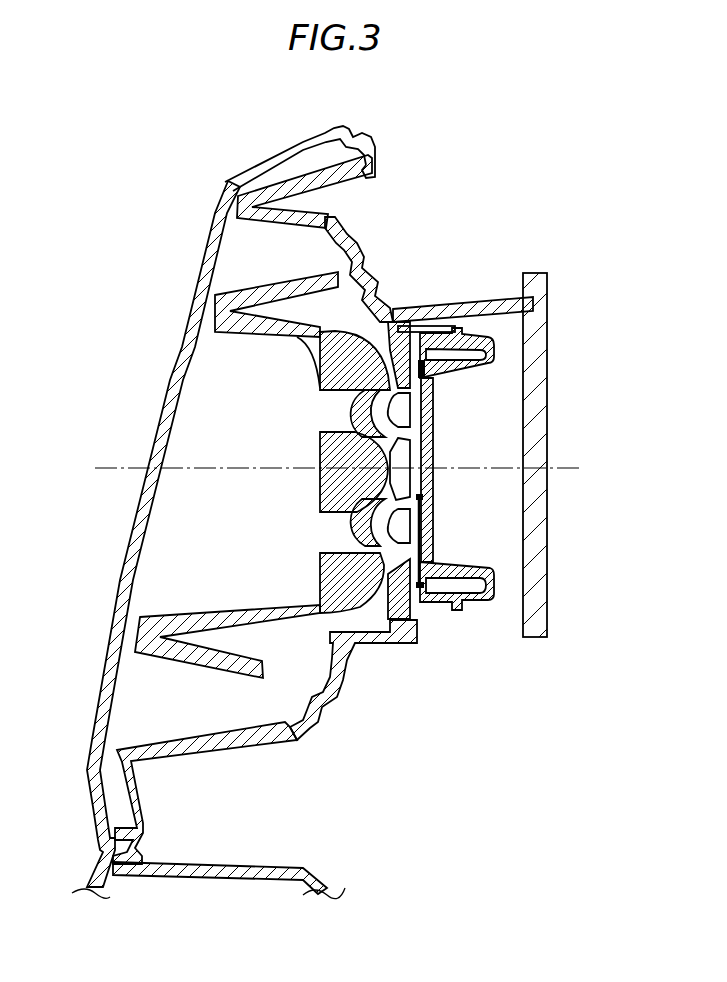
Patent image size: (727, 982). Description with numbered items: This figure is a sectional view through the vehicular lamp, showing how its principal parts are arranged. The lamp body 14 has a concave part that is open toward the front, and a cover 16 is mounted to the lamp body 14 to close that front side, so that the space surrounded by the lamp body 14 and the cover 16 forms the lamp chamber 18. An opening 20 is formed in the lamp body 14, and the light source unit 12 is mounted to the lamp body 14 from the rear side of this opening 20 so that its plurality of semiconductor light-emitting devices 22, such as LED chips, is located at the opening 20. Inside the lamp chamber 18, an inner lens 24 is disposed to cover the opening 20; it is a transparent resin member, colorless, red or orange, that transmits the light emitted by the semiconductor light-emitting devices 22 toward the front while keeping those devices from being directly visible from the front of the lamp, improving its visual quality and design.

The light source unit 12 is at (437, 537).
The lamp body 14 is at (353, 243).
The cover 16 is at (93, 723).
The lamp chamber 18 is at (212, 560).
The opening 20 is at (399, 553).
The semiconductor light-emitting devices 22 is at (397, 385).
The inner lens 24 is at (252, 333).